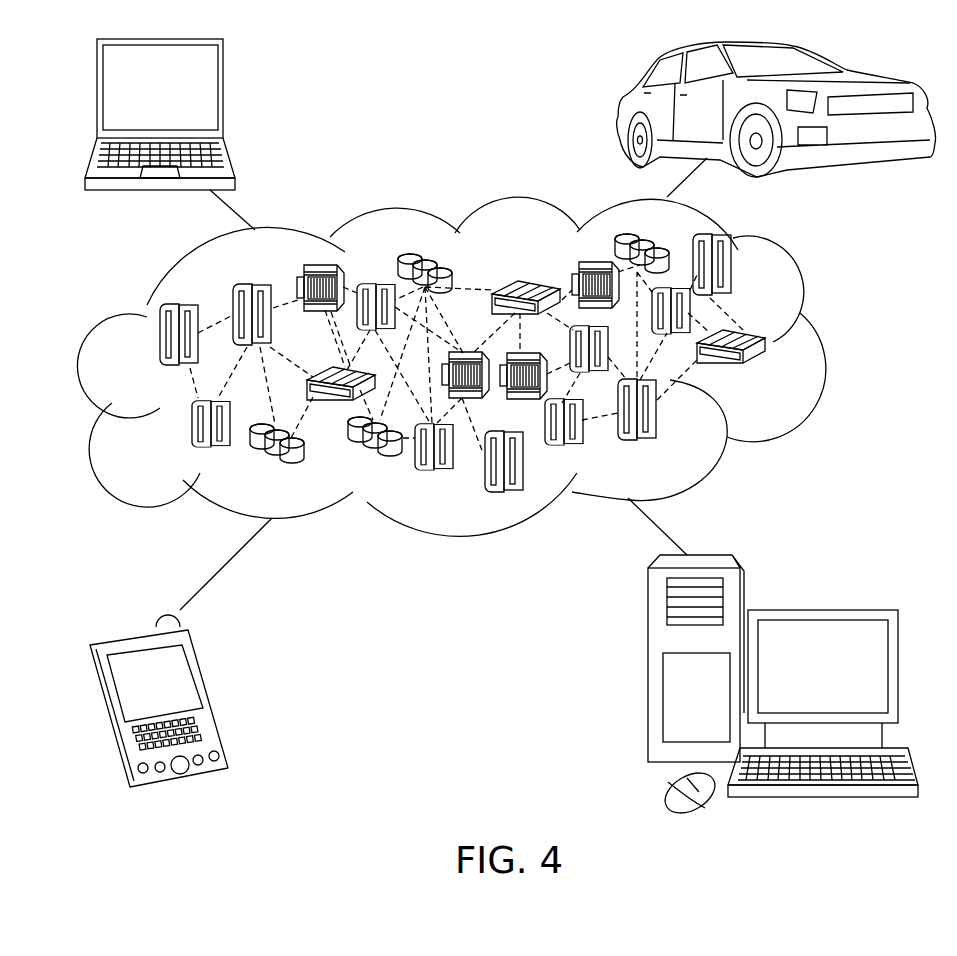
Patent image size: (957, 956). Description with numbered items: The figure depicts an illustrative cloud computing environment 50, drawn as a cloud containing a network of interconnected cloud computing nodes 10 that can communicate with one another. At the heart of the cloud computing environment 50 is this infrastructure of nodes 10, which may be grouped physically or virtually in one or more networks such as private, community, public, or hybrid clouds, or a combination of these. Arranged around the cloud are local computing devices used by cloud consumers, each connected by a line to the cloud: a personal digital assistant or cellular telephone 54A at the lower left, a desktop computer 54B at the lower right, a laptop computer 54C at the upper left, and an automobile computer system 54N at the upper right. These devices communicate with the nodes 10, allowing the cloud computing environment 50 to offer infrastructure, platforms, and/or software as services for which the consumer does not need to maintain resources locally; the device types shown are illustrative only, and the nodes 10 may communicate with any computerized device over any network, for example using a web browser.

The cloud computing environment 50 is at (473, 366).
The cloud computing node 10 is at (783, 380).
The personal digital assistant or cellular telephone 54A is at (210, 694).
The desktop computer 54B is at (877, 609).
The laptop computer 54C is at (222, 96).
The automobile computer system 54N is at (620, 105).